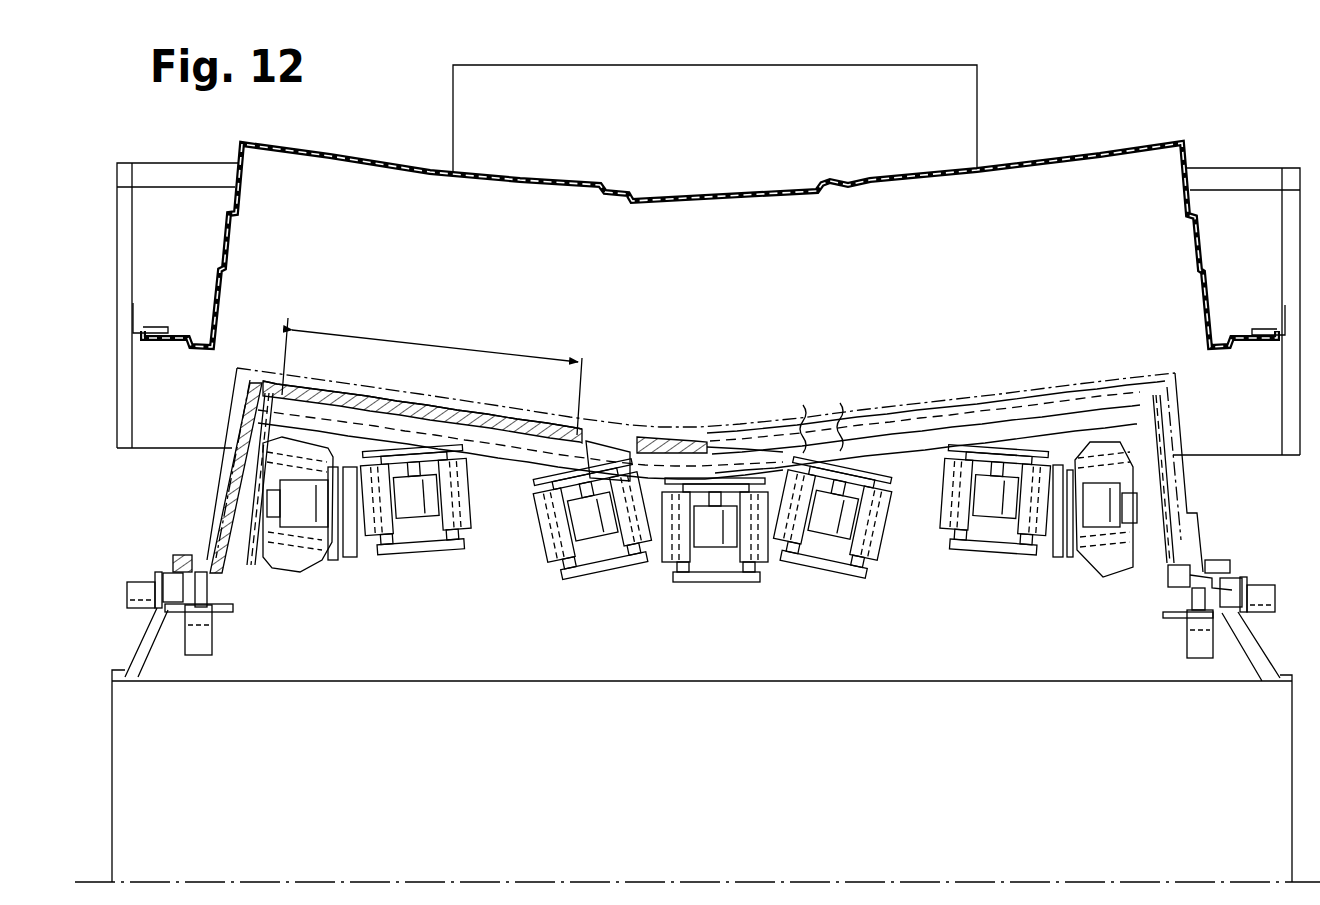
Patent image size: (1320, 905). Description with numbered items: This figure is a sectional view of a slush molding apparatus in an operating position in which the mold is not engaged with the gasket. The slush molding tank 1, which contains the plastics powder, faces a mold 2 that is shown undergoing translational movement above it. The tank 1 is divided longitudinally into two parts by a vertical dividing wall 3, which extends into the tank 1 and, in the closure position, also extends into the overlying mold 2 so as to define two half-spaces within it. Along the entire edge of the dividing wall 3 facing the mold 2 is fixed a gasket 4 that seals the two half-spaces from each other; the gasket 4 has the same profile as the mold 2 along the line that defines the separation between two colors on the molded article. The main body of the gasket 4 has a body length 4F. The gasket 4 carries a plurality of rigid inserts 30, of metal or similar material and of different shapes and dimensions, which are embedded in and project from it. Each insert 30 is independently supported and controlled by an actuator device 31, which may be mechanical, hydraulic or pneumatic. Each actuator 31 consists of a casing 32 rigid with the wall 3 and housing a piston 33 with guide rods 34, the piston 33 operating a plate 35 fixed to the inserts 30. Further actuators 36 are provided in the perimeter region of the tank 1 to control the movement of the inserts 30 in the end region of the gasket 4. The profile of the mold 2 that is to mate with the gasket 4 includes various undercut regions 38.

The slush molding tank 1 is at (1294, 776).
The mold 2 is at (1043, 158).
The dividing wall 3 is at (687, 668).
The gasket 4 is at (955, 410).
The body length 4F is at (432, 373).
The inserts 30 is at (232, 575).
The actuator devices 31 is at (335, 565).
The casing 32 is at (467, 530).
The piston 33 is at (410, 512).
The guide rods 34 is at (592, 570).
The plate 35 is at (265, 482).
The actuators 36 is at (140, 582).
The undercut regions 38 is at (230, 240).